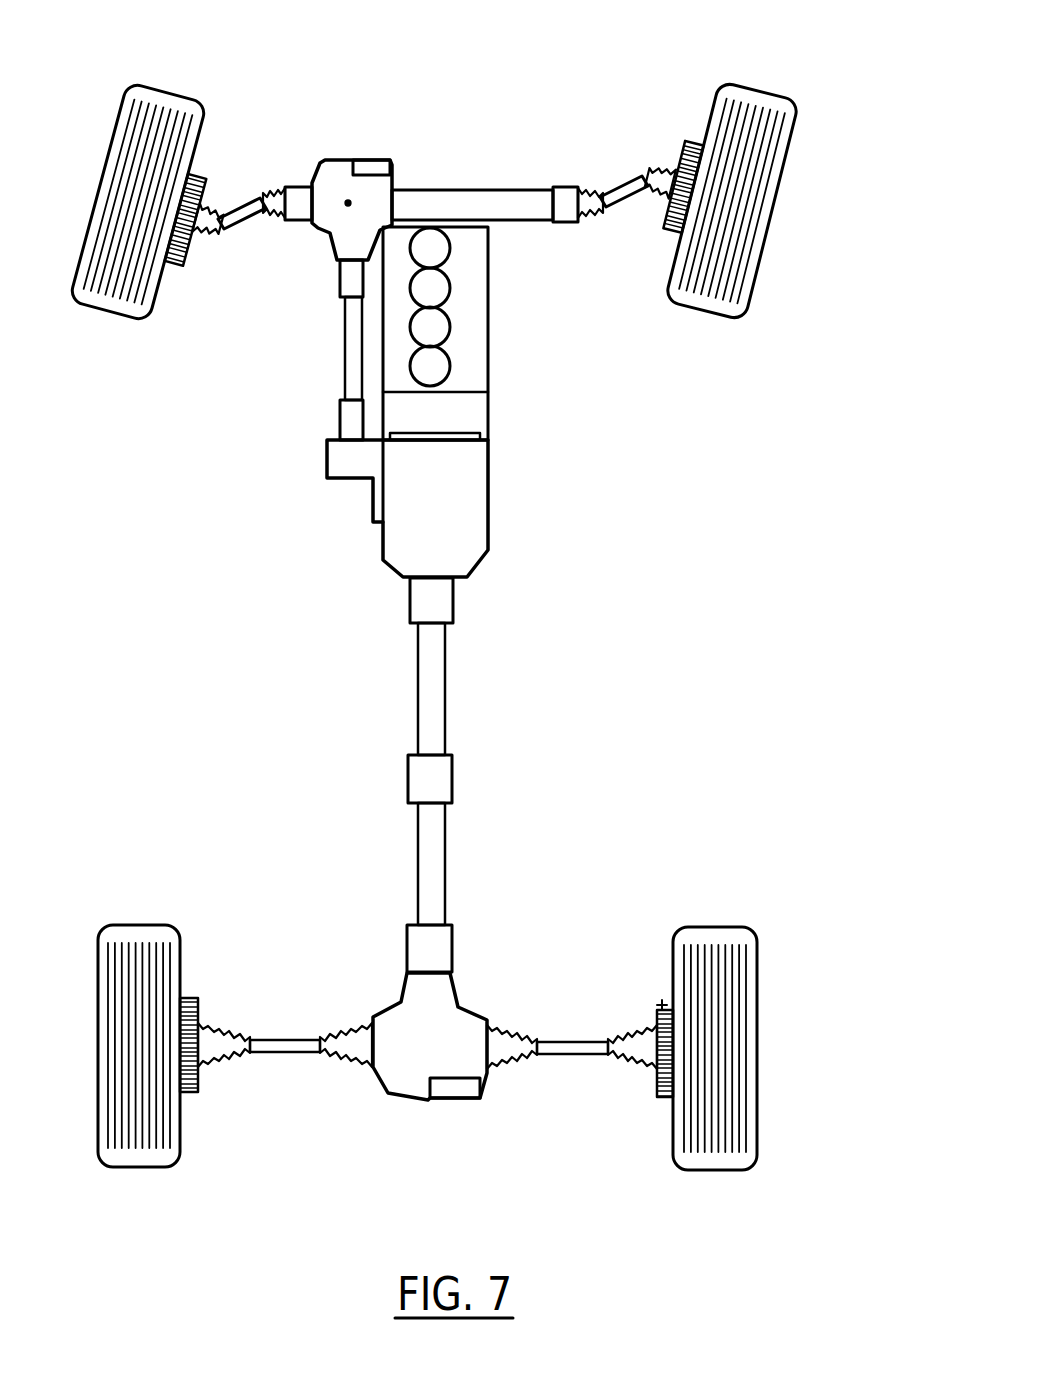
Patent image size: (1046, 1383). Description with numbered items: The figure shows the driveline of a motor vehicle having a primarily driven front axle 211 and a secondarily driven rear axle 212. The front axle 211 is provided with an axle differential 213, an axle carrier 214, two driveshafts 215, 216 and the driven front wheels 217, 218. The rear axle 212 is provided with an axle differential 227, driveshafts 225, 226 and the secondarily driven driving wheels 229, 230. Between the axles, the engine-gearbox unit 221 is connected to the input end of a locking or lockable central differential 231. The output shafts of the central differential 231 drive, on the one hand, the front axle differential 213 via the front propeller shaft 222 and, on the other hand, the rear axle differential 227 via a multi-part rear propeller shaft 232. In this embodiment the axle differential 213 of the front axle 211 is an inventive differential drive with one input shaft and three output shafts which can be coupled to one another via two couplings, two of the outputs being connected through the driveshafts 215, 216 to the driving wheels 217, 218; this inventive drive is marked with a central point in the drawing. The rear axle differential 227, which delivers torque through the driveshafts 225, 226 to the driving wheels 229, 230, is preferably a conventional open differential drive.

The front axle 211 is at (843, 234).
The rear axle 212 is at (827, 1065).
The axle differential 213 is at (338, 175).
The axle carrier 214 is at (463, 205).
The driveshaft 215 is at (241, 207).
The driveshaft 216 is at (619, 186).
The front wheel 217 is at (166, 97).
The front wheel 218 is at (750, 88).
The engine-gearbox unit 221 is at (537, 403).
The front propeller shaft 222 is at (345, 370).
The driveshaft 225 is at (282, 1047).
The driveshaft 226 is at (575, 1052).
The axle differential 227 is at (415, 1073).
The driving wheel 229 is at (138, 935).
The driving wheel 230 is at (712, 942).
The central differential 231 is at (477, 510).
The rear propeller shaft 232 is at (445, 715).